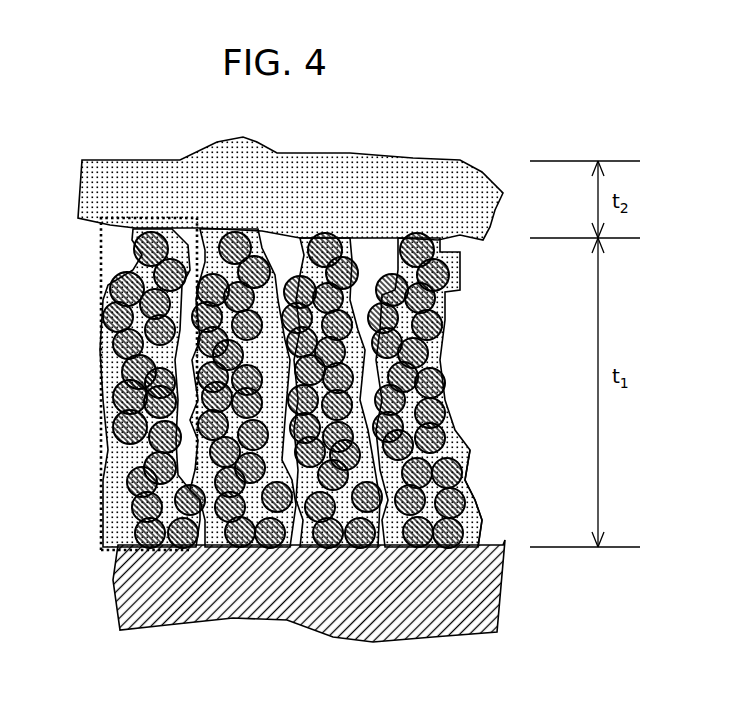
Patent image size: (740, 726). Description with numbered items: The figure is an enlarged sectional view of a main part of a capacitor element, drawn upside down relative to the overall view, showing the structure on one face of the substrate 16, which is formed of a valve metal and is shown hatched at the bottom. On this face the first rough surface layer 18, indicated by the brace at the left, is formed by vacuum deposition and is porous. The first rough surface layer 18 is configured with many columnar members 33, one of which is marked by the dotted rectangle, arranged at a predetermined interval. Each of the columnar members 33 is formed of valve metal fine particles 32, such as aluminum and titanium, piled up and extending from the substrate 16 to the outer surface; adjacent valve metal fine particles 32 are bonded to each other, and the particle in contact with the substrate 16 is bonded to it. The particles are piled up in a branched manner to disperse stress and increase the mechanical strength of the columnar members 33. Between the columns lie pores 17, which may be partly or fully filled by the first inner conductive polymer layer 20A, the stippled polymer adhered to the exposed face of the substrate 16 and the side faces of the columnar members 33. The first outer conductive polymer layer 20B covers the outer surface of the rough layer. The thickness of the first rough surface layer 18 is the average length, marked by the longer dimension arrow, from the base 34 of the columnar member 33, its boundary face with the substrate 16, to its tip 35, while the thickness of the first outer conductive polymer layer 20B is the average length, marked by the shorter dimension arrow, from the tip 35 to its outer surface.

The substrate 16 is at (177, 600).
The pores 17 is at (377, 530).
The first rough surface layer 18 is at (67, 225).
The first inner conductive polymer layer 20A is at (320, 327).
The first outer conductive polymer layer 20B is at (365, 180).
The valve metal fine particles 32 is at (232, 235).
The columnar members 33 is at (112, 218).
The base of columnar member 34 is at (453, 540).
The tip of columnar member 35 is at (415, 233).